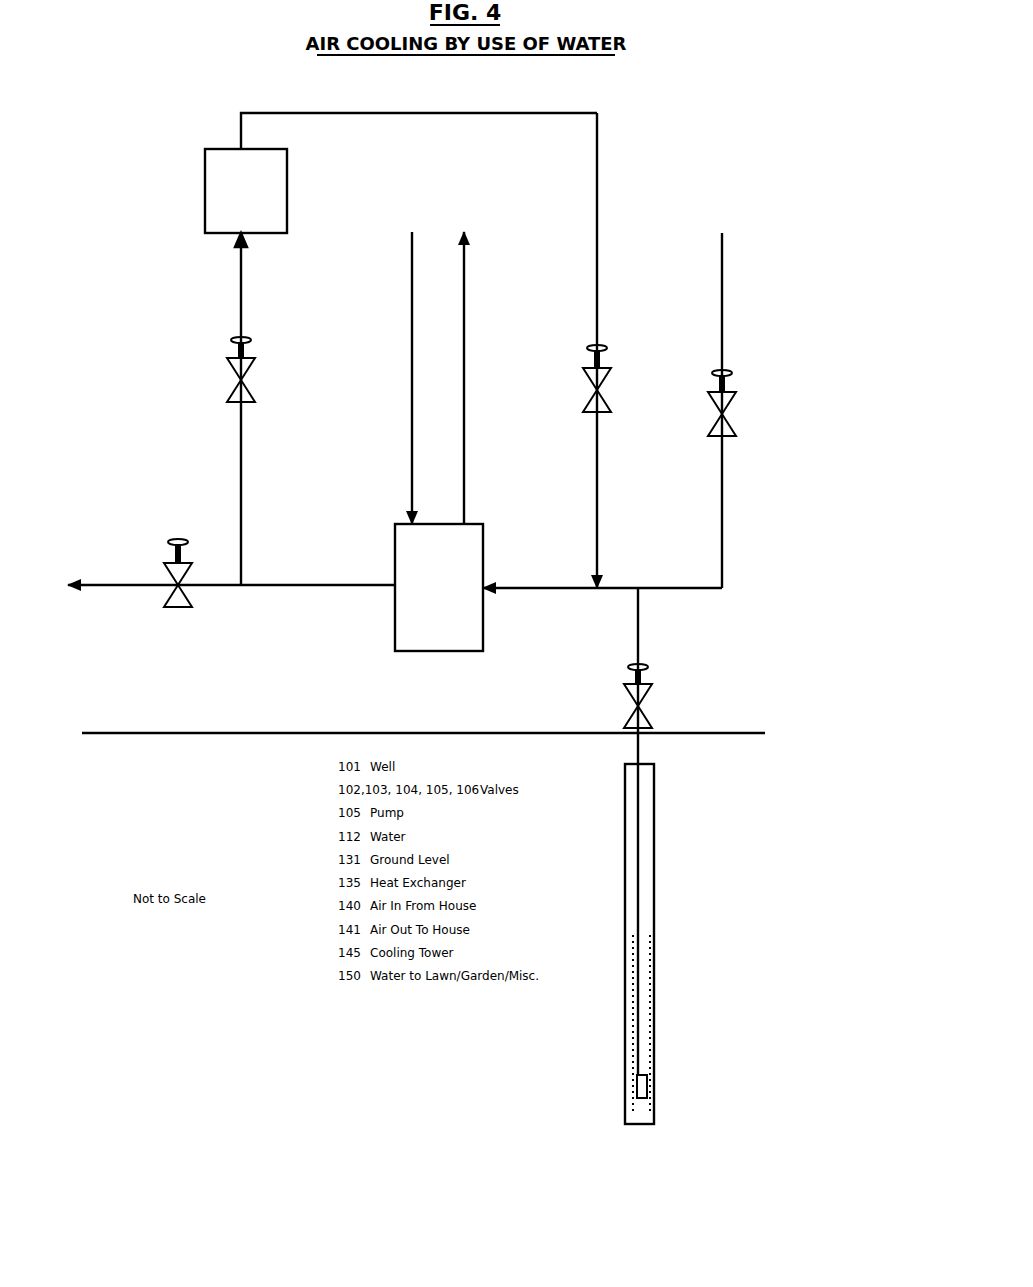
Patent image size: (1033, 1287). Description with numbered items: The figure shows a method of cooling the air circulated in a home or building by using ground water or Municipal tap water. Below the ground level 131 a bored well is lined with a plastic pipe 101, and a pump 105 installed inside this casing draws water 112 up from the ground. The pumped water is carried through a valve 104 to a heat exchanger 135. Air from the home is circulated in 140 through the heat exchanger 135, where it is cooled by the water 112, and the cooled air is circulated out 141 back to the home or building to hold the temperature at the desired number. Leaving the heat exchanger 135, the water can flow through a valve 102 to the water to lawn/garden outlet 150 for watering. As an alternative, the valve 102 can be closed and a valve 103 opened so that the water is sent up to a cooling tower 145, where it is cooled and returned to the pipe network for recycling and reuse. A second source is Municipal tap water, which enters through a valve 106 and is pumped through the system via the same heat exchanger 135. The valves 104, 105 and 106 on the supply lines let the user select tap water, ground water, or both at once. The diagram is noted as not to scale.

The plastic pipe 101 is at (624, 912).
The valve 102 is at (190, 550).
The valve 103 is at (250, 340).
The valve 104 is at (652, 694).
The pump 105 is at (734, 378).
The valve 106 is at (608, 352).
The water 112 is at (656, 955).
The ground level 131 is at (207, 736).
The heat exchanger 135 is at (388, 634).
The air in from house 140 is at (404, 314).
The air out to house 141 is at (472, 318).
The cooling tower 145 is at (292, 230).
The water to lawn/garden 150 is at (94, 580).